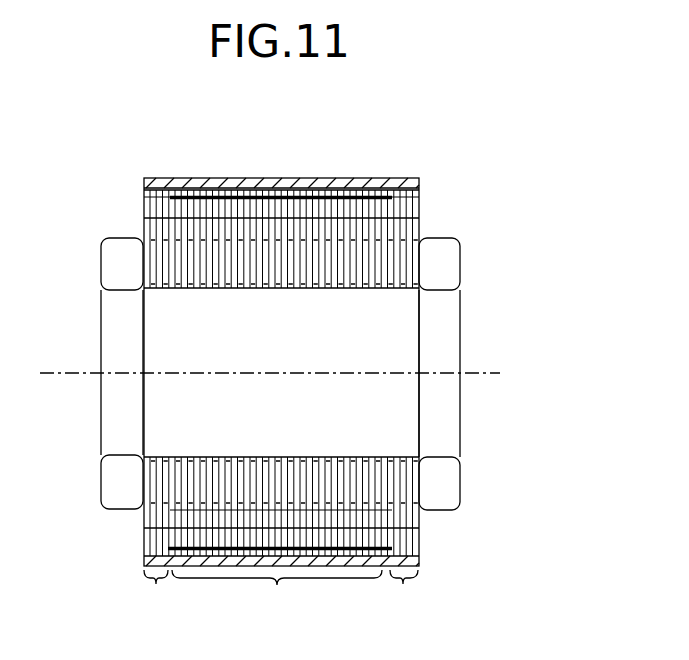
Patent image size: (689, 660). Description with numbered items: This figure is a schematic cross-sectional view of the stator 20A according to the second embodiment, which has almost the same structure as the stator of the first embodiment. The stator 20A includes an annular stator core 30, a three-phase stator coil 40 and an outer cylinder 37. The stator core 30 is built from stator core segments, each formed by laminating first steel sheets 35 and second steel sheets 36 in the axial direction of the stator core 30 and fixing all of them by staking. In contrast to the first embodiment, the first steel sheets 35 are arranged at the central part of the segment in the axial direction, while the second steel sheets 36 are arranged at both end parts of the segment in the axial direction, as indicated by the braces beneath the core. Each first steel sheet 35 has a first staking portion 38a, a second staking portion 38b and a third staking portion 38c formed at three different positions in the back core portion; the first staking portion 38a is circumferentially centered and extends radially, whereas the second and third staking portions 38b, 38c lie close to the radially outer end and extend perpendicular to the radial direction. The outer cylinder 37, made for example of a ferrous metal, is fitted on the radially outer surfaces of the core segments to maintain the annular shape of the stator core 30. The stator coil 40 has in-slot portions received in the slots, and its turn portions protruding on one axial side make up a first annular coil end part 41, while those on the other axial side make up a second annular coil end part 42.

The stator 20A is at (356, 138).
The stator core 30 is at (424, 198).
The first steel sheets 35 is at (277, 594).
The second steel sheets 36 is at (280, 594).
The outer cylinder 37 is at (200, 178).
The first staking portion 38a is at (148, 228).
The second staking portion 38b is at (148, 198).
The third staking portion 38c is at (142, 548).
The stator coil 40 is at (465, 305).
The first annular coil end part 41 is at (112, 483).
The second annular coil end part 42 is at (448, 490).